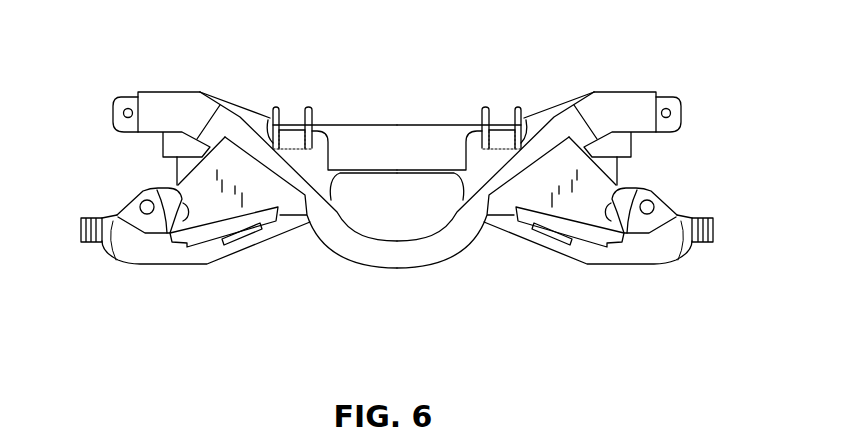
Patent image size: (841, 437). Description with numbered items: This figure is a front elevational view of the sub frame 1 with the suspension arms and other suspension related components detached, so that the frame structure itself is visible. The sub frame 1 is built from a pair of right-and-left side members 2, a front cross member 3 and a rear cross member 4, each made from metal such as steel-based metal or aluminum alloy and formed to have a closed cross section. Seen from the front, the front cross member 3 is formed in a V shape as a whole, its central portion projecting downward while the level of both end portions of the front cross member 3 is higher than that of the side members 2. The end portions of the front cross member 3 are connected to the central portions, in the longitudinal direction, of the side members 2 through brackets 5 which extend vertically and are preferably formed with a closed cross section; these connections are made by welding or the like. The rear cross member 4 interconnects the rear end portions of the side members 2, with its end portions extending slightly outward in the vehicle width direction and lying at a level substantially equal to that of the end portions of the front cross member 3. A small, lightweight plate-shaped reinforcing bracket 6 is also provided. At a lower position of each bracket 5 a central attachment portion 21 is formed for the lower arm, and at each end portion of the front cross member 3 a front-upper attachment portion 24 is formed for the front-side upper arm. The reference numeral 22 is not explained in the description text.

The sub frame 1 is at (519, 37).
The side member 2 is at (172, 253).
The front cross member 3 is at (398, 257).
The rear cross member 4 is at (382, 138).
The bracket 5 is at (260, 199).
The plate-shaped reinforcing bracket 6 is at (208, 236).
The central attachment portion 21 is at (183, 193).
The bolt 22 is at (117, 259).
The front-upper attachment portion 24 is at (128, 99).